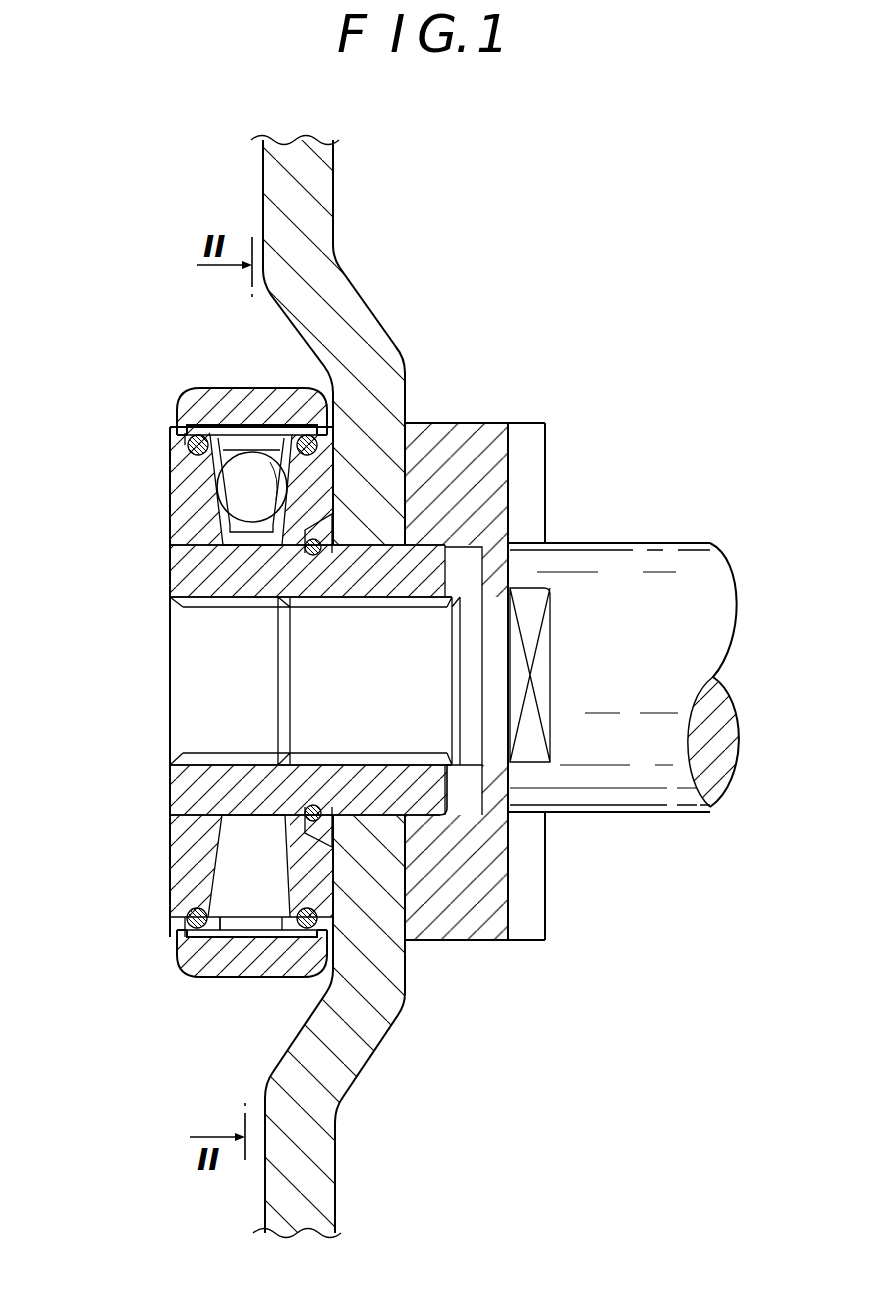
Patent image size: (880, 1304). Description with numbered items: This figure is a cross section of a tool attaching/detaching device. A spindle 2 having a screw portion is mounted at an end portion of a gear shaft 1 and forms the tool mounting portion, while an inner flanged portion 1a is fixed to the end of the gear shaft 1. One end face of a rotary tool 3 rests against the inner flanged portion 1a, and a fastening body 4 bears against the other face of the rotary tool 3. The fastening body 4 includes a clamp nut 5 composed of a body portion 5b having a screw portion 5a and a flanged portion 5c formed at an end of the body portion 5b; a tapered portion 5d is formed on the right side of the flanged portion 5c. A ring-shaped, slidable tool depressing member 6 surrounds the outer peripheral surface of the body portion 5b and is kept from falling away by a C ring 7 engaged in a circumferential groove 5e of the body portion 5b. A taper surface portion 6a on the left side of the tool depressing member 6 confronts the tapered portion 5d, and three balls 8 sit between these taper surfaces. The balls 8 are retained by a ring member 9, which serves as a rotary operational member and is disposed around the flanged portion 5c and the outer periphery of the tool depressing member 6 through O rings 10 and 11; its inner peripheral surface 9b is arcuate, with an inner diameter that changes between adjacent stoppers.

The gear shaft 1 is at (675, 560).
The inner flanged portion 1a is at (487, 923).
The spindle 2 is at (422, 618).
The rotary tool 3 is at (303, 209).
The fastening body 4 is at (158, 933).
The clamp nut 5 is at (168, 803).
The screw portion 5a is at (213, 613).
The body portion 5b is at (272, 569).
The flanged portion 5c is at (190, 506).
The tapered portion 5d is at (232, 868).
The circumferential groove 5e is at (305, 822).
The tool depressing member 6 is at (257, 423).
The taper surface portion 6a is at (262, 930).
The C ring 7 is at (275, 875).
The ball 8 is at (240, 487).
The ring member 9 is at (190, 962).
The inner peripheral surface 9b is at (247, 922).
The O ring 10 is at (182, 943).
The O ring 11 is at (310, 933).